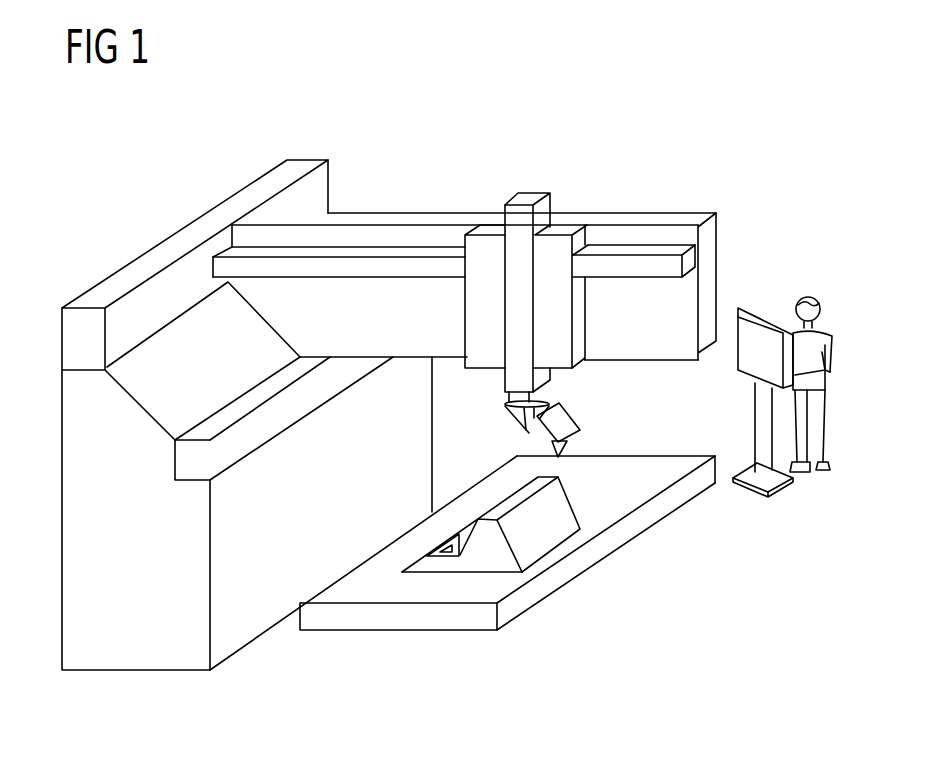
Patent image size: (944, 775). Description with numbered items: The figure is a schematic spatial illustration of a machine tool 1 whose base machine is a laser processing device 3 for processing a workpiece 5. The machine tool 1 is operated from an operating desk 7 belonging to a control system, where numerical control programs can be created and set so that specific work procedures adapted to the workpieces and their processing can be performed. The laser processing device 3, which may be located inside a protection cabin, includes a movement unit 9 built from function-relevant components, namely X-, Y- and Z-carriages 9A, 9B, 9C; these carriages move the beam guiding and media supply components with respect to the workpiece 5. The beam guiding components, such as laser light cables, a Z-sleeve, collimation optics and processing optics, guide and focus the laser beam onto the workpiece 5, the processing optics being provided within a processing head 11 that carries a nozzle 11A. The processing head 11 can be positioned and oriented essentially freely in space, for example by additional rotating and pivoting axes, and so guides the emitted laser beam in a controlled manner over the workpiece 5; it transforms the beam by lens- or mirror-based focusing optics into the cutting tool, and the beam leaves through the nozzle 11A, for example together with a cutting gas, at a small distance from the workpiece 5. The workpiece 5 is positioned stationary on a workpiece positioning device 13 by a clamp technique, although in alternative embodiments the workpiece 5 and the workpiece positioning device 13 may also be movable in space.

The machine tool 1 is at (509, 138).
The laser processing device 3 is at (671, 635).
The workpiece 5 is at (553, 503).
The operating desk 7 is at (737, 368).
The movement unit 9 is at (207, 178).
The X-carriage 9A is at (127, 275).
The Y-carriage 9B is at (627, 188).
The Z-carriage 9C is at (558, 308).
The processing head 11 is at (560, 408).
The nozzle 11A is at (567, 448).
The workpiece positioning device 13 is at (678, 493).